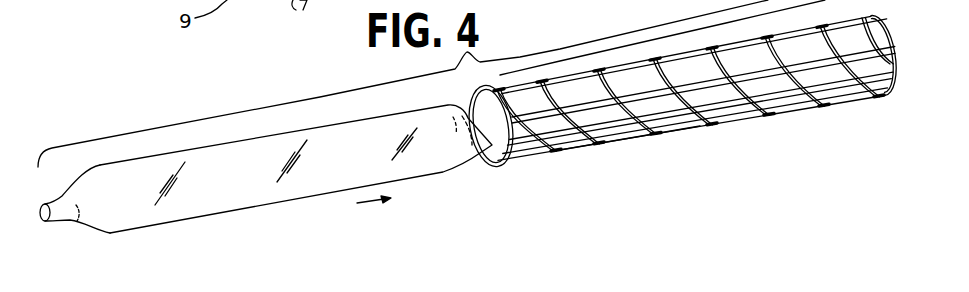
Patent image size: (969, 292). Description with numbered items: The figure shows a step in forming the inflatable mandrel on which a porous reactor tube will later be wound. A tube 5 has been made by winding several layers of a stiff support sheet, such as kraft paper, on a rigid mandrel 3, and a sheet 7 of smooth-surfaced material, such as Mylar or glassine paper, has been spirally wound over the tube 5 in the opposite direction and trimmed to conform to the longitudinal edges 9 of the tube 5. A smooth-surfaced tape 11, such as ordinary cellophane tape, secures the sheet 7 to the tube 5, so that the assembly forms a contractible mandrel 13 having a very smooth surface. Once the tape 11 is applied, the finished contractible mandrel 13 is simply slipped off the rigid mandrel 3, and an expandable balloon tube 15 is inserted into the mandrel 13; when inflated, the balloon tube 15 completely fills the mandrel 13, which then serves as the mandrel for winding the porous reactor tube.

The rigid mandrel 3 is at (431, 83).
The tube 5 is at (490, 89).
The sheet of smooth-surfaced material 7 is at (675, 112).
The longitudinal edges 9 is at (489, 167).
The smooth-surfaced tape 11 is at (757, 104).
The contractible mandrel 13 is at (626, 143).
The expandable balloon tube 15 is at (299, 199).